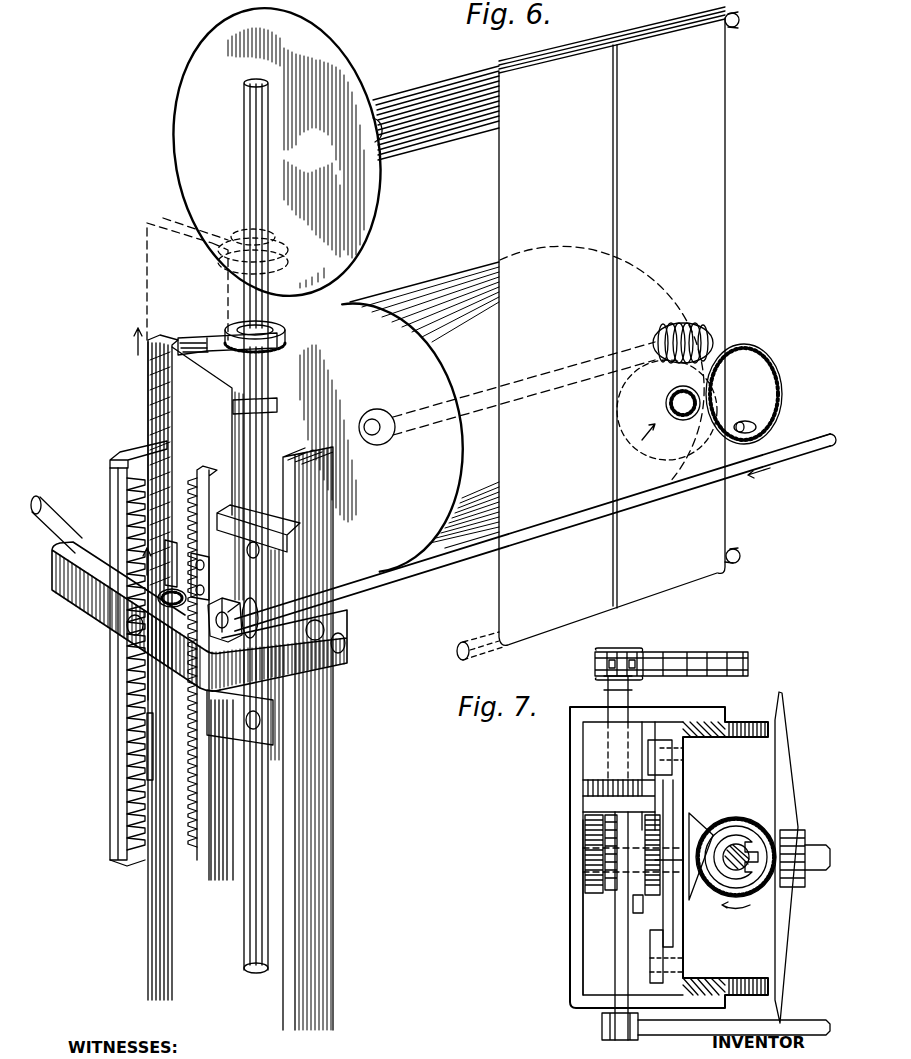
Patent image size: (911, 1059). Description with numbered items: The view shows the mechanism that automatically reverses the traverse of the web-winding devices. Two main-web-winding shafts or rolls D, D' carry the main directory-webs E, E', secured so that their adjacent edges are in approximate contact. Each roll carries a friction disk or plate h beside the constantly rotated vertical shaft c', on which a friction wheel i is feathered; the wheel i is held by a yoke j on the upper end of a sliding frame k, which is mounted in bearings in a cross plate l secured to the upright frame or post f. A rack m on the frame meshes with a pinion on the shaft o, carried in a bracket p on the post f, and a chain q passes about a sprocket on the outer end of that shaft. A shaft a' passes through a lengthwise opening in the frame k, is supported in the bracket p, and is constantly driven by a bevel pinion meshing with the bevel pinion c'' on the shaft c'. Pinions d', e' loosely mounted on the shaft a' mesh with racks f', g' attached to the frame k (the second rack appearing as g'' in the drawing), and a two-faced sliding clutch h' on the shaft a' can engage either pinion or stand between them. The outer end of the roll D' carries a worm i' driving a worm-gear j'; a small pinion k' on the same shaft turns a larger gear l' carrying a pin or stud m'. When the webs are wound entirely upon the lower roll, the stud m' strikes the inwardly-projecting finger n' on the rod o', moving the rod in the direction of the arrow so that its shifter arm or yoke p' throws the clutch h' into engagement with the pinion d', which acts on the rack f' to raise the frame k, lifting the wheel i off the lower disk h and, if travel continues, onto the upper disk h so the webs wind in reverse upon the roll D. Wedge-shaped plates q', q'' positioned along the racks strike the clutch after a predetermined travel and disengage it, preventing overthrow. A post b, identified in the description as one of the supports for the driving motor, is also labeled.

In FIG. 6, the shaft c' is at (235, 526).
In FIG. 7, the shaft c' is at (730, 888).
In FIG. 6, the disk or plate h is at (315, 286).
In FIG. 7, the disk or plate h is at (787, 857).
In FIG. 6, the main-web-winding shaft or roll D is at (556, 83).
In FIG. 6, the main-web-winding shaft or roll D' is at (527, 397).
In FIG. 6, the web E is at (587, 352).
In FIG. 6, the web E' is at (702, 295).
In FIG. 6, the worm i' is at (683, 322).
In FIG. 6, the small pinion k' is at (667, 410).
In FIG. 6, the worm-gear j' is at (639, 448).
In FIG. 7, the worm-gear j' is at (721, 904).
In FIG. 6, the larger gear l' is at (750, 394).
In FIG. 6, the pin or stud m' is at (770, 416).
In FIG. 6, the inwardly-projecting finger n' is at (815, 421).
In FIG. 6, the rod o' is at (535, 532).
In FIG. 7, the rod o' is at (716, 935).
In FIG. 6, the sliding frame k is at (189, 459).
In FIG. 7, the sliding frame k is at (673, 807).
In FIG. 6, the friction wheel or pulley i is at (275, 321).
In FIG. 6, the U-shaped member or yoke j is at (227, 326).
In FIG. 6, the frame or supporting member f is at (250, 682).
In FIG. 7, the frame or supporting member f is at (724, 845).
In FIG. 6, the cross plate or bar l is at (258, 523).
In FIG. 7, the cross plate or bar l is at (674, 843).
In FIG. 6, the rack m is at (127, 450).
In FIG. 6, the rack f' is at (114, 667).
In FIG. 7, the rack f' is at (597, 779).
In FIG. 6, the rack g'' is at (202, 671).
In FIG. 7, the rack g'' is at (633, 834).
In FIG. 6, the pinion e' is at (163, 563).
In FIG. 7, the pinion e' is at (651, 875).
In FIG. 6, the two-faced sliding clutch h' is at (164, 591).
In FIG. 7, the two-faced sliding clutch h' is at (605, 874).
In FIG. 6, the plate q'' is at (218, 576).
In FIG. 6, the shaft o is at (56, 516).
In FIG. 7, the shaft o is at (605, 699).
In FIG. 6, the bracket p is at (132, 616).
In FIG. 7, the bracket p is at (657, 857).
In FIG. 6, the shifter arm or yoke p' is at (279, 650).
In FIG. 7, the shifter arm or yoke p' is at (597, 907).
In FIG. 6, the shaft a' is at (113, 631).
In FIG. 6, the pinion d' is at (205, 629).
In FIG. 7, the pinion d' is at (573, 871).
In FIG. 6, the wedge-shaped plate q' is at (181, 735).
In FIG. 7, the wedge-shaped plate q' is at (656, 939).
In FIG. 7, the chain q is at (671, 654).
In FIG. 7, the post b is at (702, 818).
In FIG. 7, the pinion c'' is at (736, 842).
In FIG. 7, the rack g' is at (680, 898).